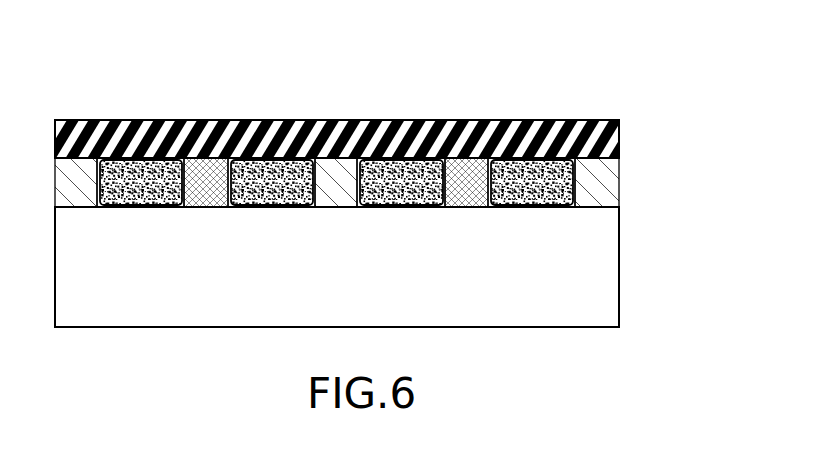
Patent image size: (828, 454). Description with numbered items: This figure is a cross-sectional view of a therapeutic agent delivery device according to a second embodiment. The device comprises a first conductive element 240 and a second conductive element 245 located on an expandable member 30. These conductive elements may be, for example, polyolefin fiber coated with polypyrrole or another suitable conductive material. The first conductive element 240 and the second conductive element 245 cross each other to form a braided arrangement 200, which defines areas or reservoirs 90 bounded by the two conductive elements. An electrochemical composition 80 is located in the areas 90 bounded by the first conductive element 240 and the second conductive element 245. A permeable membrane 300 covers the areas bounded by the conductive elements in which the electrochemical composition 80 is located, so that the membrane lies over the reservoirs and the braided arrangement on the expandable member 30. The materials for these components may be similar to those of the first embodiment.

The expandable member 30 is at (618, 267).
The electrochemical composition 80 is at (415, 162).
The areas or reservoirs 90 is at (264, 162).
The braided arrangement 200 is at (642, 178).
The first conductive element 240 is at (199, 170).
The second conductive element 245 is at (74, 172).
The permeable membrane 300 is at (619, 121).